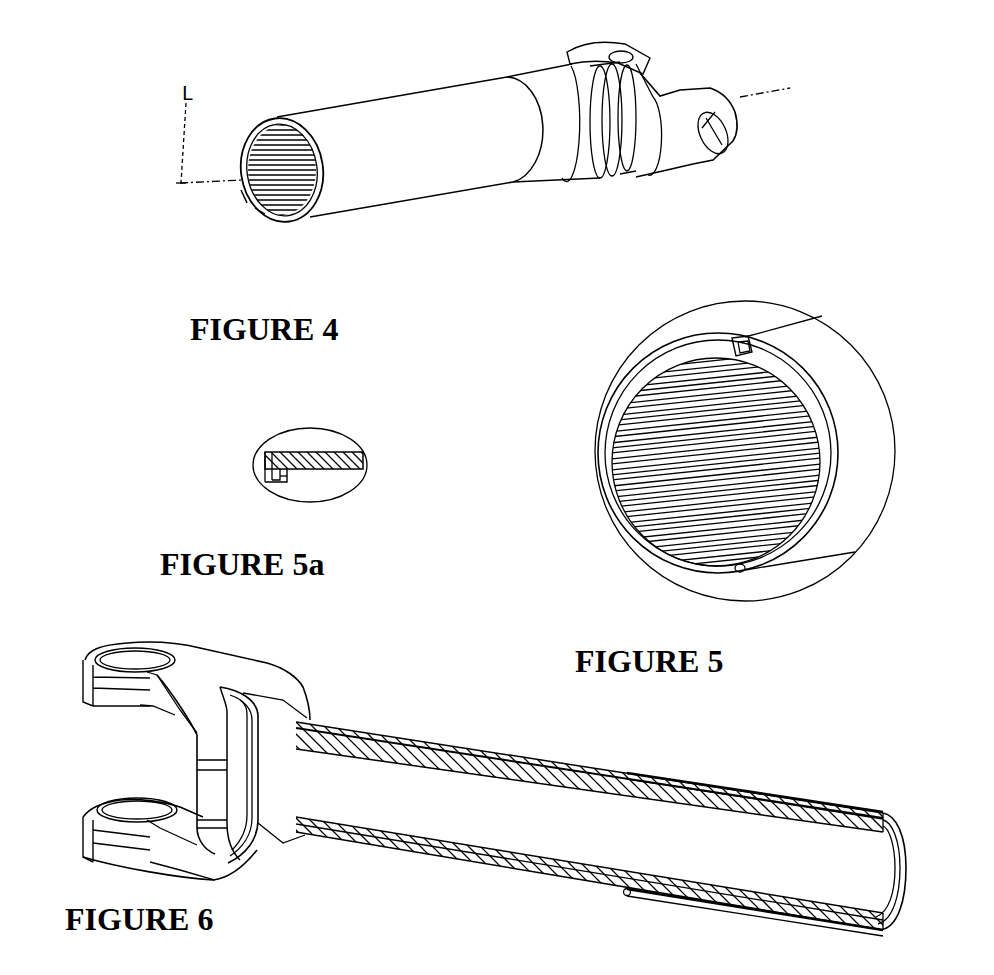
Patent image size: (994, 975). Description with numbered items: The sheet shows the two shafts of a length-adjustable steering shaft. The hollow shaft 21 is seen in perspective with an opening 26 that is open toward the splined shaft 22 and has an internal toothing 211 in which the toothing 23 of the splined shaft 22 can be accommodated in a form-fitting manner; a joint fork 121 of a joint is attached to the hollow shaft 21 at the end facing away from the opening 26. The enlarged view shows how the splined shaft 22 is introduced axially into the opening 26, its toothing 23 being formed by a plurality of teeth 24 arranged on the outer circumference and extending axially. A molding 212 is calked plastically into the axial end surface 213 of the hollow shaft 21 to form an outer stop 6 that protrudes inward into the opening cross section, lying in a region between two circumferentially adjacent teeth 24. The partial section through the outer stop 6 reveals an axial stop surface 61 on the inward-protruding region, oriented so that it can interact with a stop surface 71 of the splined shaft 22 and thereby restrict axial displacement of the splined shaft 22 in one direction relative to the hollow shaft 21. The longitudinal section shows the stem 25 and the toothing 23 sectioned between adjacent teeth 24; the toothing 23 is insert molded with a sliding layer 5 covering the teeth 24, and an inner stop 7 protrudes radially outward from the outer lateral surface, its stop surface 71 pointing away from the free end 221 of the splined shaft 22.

In FIG. 4, the hollow shaft 21 is at (413, 130).
In FIG. 5a, the hollow shaft 21 is at (323, 455).
In FIG. 5, the hollow shaft 21 is at (754, 440).
In FIG. 4, the joint fork 121 is at (680, 135).
In FIG. 6, the joint fork 121 is at (210, 667).
In FIG. 4, the opening 26 is at (237, 195).
In FIG. 5, the opening 26 is at (733, 573).
In FIG. 4, the internal toothing 211 is at (255, 208).
In FIG. 5a, the molding 212 is at (268, 462).
In FIG. 5, the molding 212 is at (742, 338).
In FIG. 5a, the outer stop 6 is at (270, 477).
In FIG. 5, the outer stop 6 is at (753, 352).
In FIG. 5a, the axial stop surface 61 is at (292, 478).
In FIG. 5, the axial end surface 213 is at (817, 403).
In FIG. 5, the splined shaft 22 is at (691, 439).
In FIG. 6, the splined shaft 22 is at (527, 817).
In FIG. 5, the teeth 24 is at (645, 375).
In FIG. 6, the teeth 24 is at (884, 873).
In FIG. 6, the stem 25 is at (443, 760).
In FIG. 6, the toothing 23 is at (765, 795).
In FIG. 6, the stop surface 71 is at (583, 763).
In FIG. 6, the layer 5 is at (628, 773).
In FIG. 6, the inner stop 7 is at (637, 775).
In FIG. 6, the free end 221 is at (889, 925).